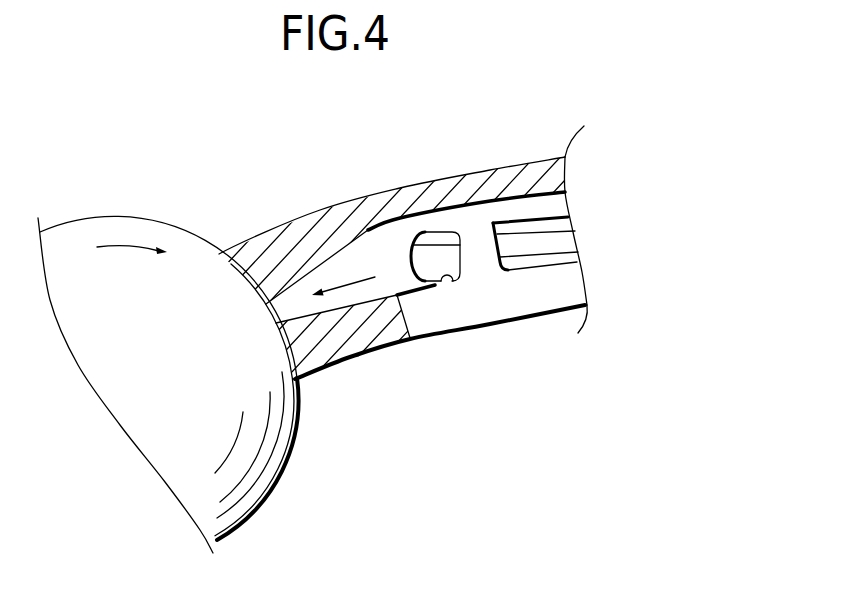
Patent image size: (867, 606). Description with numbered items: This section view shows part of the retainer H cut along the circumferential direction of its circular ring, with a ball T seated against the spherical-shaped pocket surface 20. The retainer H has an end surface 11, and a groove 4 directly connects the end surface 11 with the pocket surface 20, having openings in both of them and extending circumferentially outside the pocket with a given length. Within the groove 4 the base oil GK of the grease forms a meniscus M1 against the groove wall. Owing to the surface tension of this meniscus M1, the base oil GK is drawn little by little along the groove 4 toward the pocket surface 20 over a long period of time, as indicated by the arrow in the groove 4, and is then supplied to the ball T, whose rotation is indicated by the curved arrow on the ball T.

The ball T is at (115, 213).
The pocket surface 20 is at (238, 262).
The retainer H is at (501, 153).
The meniscus M1 is at (430, 258).
The groove 4 is at (455, 280).
The end surface 11 is at (550, 298).
The base oil GK is at (352, 287).